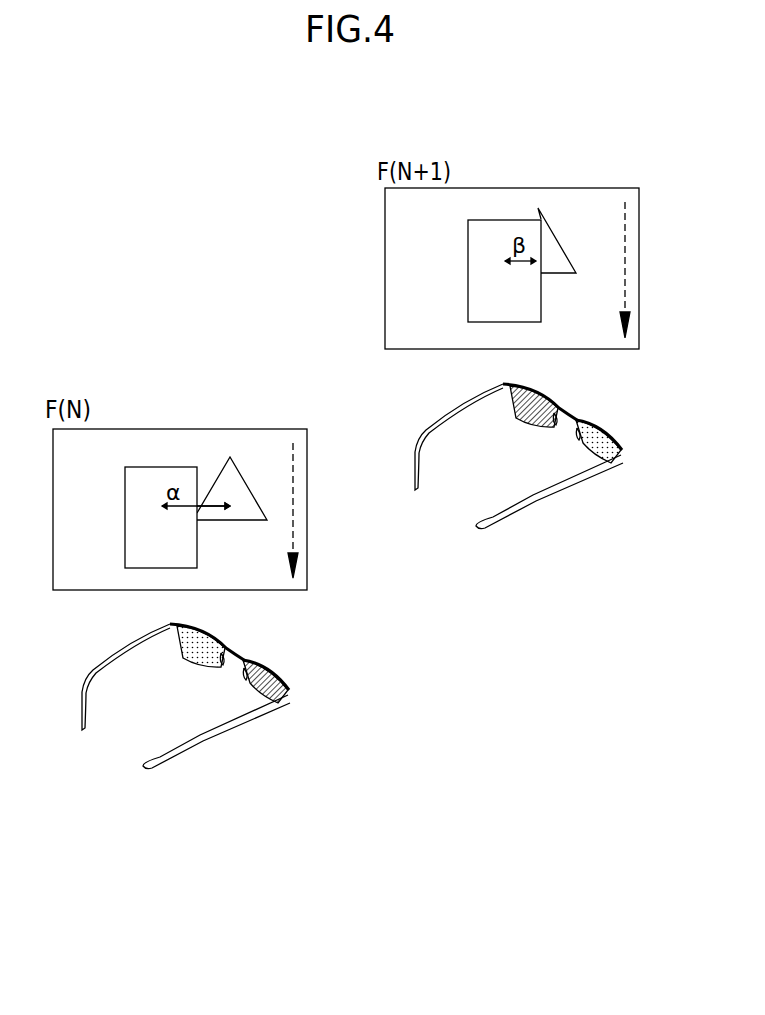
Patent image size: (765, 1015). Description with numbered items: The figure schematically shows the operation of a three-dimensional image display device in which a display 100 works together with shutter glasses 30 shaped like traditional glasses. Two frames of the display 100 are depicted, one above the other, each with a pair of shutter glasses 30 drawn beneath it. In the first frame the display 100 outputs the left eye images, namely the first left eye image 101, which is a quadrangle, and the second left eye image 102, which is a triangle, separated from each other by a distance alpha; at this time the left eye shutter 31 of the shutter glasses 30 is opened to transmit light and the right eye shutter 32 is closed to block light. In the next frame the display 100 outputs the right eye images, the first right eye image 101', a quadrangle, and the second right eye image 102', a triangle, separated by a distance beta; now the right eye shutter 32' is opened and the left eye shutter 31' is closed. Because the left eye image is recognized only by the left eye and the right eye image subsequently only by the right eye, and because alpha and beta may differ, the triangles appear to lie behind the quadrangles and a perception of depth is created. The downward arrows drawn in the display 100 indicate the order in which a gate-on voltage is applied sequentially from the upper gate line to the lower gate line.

The display 100 is at (275, 443).
The first left eye image 101 is at (161, 472).
The second left eye image 102 is at (232, 445).
The first right eye image 101' is at (504, 227).
The second right eye image 102' is at (564, 203).
The shutter glasses 30 is at (175, 757).
The left eye shutter (open) 31 is at (191, 667).
The right eye shutter (closed) 32 is at (270, 721).
The left eye shutter (closed) 31' is at (522, 427).
The right eye shutter (open) 32' is at (602, 484).